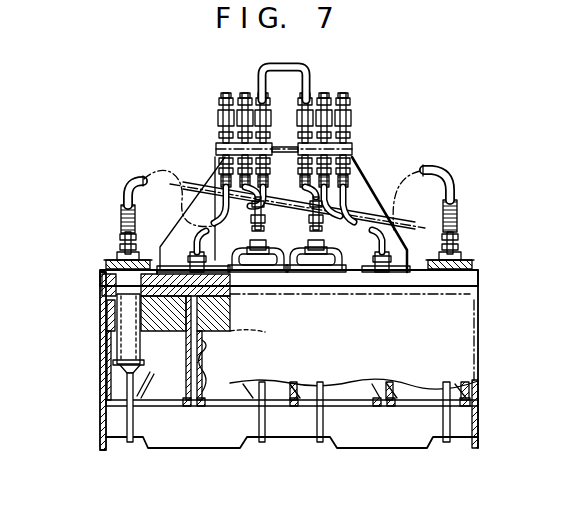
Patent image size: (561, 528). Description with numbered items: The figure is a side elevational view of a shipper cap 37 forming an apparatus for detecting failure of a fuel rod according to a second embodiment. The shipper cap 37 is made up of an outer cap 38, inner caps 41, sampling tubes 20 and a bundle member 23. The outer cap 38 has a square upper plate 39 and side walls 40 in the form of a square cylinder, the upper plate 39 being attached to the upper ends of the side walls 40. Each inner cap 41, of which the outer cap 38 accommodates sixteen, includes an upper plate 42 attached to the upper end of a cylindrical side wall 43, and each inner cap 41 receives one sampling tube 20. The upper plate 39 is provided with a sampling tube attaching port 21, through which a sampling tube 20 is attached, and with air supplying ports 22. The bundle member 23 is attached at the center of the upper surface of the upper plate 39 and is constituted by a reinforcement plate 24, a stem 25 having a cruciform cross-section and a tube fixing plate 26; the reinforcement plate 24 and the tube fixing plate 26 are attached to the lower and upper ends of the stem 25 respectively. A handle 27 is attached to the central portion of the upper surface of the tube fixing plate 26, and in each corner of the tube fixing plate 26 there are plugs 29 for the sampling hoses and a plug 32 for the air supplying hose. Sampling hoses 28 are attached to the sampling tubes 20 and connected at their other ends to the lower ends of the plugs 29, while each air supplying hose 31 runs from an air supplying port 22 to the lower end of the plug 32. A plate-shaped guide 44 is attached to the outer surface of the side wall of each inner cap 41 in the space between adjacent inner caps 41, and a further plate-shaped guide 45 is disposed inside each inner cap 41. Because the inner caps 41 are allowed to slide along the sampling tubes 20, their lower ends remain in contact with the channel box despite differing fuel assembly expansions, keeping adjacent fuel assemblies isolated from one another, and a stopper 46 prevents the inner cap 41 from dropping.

The sampling tube 20 is at (132, 440).
The sampling tube fixture port 21 is at (110, 258).
The air supplying port 22 is at (197, 297).
The bundle member 23 is at (358, 272).
The reinforcement plate 24 is at (393, 272).
The stem 25 is at (364, 186).
The tube fixing plate 26 is at (354, 147).
The handle 27 is at (258, 72).
The sampling hose 28 is at (126, 188).
The plug for sampling hoses 29 is at (219, 138).
The air supplying hose 31 is at (190, 246).
The plug for the air supplying hose 32 is at (266, 150).
The shipper cap 37 is at (447, 163).
The outer cap 38 is at (482, 350).
The upper plate 39 is at (102, 285).
The side walls 40 is at (100, 328).
The inner cap 41 is at (172, 407).
The upper plate 42 is at (231, 330).
The cylindrical side wall 43 is at (107, 360).
The plate-shaped guide 44 is at (203, 360).
The plate-shaped guide 45 is at (147, 384).
The stopper 46 is at (153, 346).